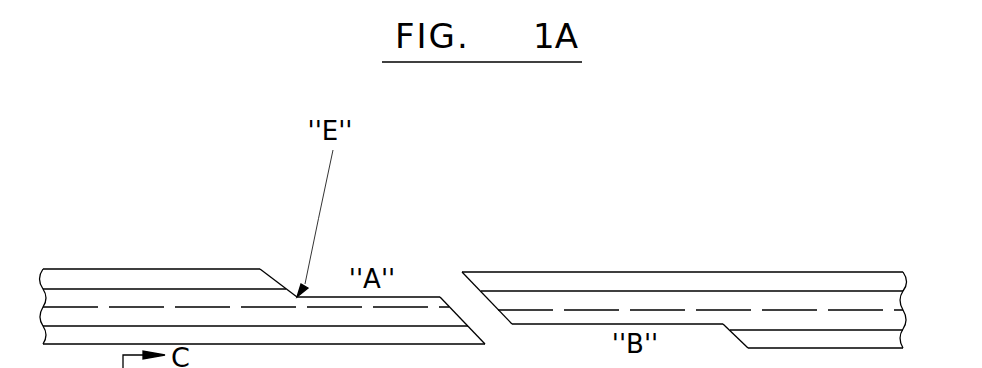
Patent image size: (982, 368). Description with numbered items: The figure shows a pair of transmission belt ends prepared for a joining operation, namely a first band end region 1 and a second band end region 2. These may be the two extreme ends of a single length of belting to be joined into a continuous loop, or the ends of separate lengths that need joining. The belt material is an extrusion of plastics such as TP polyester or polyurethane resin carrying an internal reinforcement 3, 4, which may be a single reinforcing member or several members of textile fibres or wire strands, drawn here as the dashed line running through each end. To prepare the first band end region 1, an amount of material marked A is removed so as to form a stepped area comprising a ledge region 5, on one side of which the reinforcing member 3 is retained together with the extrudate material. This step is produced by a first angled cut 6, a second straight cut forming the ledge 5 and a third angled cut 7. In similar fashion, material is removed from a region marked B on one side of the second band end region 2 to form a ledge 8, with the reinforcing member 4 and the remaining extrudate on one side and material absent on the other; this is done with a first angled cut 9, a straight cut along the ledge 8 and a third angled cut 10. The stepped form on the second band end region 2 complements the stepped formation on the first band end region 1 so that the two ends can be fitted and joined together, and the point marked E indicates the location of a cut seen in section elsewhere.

The first band end region 1 is at (173, 269).
The second band end region 2 is at (567, 272).
The reinforcing member 3 is at (108, 305).
The reinforcing member 4 is at (684, 310).
The ledge region 5 is at (398, 297).
The first angled cut 6 is at (271, 278).
The third angled cut 7 is at (458, 313).
The ledge 8 is at (602, 324).
The first angled cut 9 is at (737, 334).
The third angled cut 10 is at (486, 292).